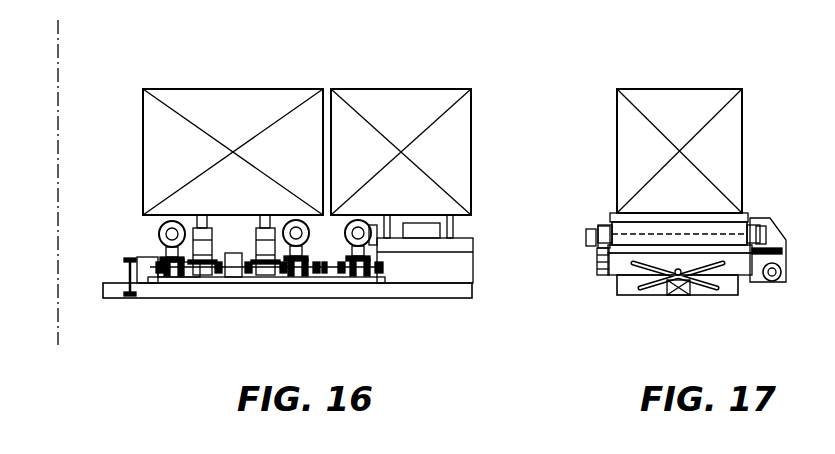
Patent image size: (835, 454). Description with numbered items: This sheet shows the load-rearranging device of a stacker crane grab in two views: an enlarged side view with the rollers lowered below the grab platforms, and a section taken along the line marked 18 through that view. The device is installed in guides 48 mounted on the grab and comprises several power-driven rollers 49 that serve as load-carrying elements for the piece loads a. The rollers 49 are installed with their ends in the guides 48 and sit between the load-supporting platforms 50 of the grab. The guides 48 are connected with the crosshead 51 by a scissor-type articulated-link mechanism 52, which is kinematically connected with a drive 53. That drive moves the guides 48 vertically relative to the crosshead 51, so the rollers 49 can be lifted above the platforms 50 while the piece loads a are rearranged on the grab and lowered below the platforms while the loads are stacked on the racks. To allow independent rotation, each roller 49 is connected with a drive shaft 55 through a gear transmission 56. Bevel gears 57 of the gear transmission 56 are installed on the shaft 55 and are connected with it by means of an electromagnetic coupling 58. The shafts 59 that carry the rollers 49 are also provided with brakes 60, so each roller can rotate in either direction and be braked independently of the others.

In FIG. 16, the section line 18- 18 is at (58, 18).
In FIG. 16, the piece loads a is at (455, 113).
In FIG. 17, the piece loads a is at (724, 158).
In FIG. 16, the guides 48 is at (332, 262).
In FIG. 17, the guides 48 is at (598, 262).
In FIG. 16, the power-driven rollers 49 is at (158, 233).
In FIG. 17, the power-driven rollers 49 is at (620, 222).
In FIG. 16, the load-supporting platforms 50 is at (236, 220).
In FIG. 16, the crosshead 51 is at (416, 290).
In FIG. 17, the crosshead 51 is at (745, 292).
In FIG. 16, the scissor-type articulated-link mechanism 52 is at (124, 272).
In FIG. 17, the scissor-type articulated-link mechanism 52 is at (693, 296).
In FIG. 17, the drive 53 is at (668, 300).
In FIG. 16, the drive shaft 55 is at (326, 278).
In FIG. 17, the drive shaft 55 is at (780, 286).
In FIG. 16, the gear transmission 56 is at (284, 278).
In FIG. 17, the gear transmission 56 is at (782, 240).
In FIG. 16, the bevel gears 57 is at (305, 278).
In FIG. 16, the electromagnetic coupling 58 is at (338, 278).
In FIG. 16, the shafts 59 is at (372, 220).
In FIG. 17, the shafts 59 is at (588, 232).
In FIG. 17, the brakes 60 is at (598, 238).